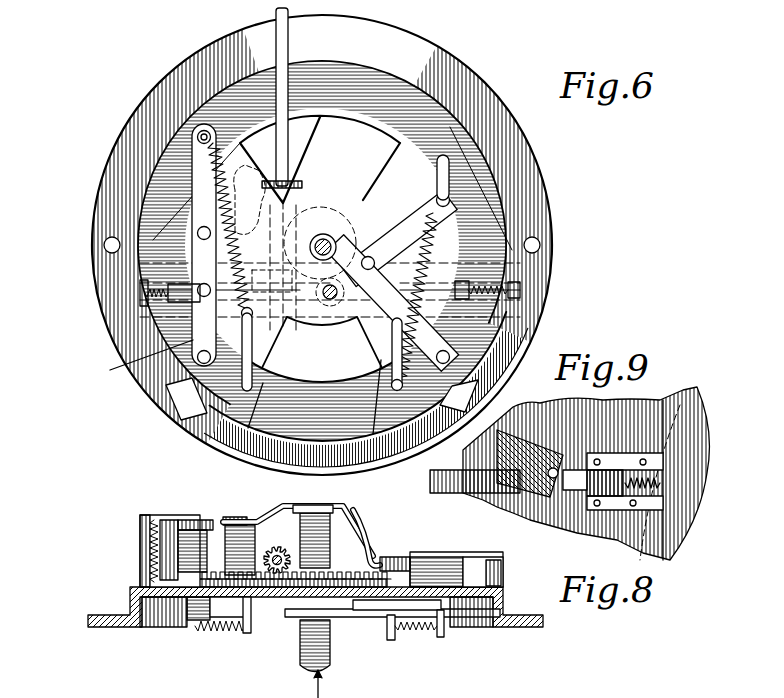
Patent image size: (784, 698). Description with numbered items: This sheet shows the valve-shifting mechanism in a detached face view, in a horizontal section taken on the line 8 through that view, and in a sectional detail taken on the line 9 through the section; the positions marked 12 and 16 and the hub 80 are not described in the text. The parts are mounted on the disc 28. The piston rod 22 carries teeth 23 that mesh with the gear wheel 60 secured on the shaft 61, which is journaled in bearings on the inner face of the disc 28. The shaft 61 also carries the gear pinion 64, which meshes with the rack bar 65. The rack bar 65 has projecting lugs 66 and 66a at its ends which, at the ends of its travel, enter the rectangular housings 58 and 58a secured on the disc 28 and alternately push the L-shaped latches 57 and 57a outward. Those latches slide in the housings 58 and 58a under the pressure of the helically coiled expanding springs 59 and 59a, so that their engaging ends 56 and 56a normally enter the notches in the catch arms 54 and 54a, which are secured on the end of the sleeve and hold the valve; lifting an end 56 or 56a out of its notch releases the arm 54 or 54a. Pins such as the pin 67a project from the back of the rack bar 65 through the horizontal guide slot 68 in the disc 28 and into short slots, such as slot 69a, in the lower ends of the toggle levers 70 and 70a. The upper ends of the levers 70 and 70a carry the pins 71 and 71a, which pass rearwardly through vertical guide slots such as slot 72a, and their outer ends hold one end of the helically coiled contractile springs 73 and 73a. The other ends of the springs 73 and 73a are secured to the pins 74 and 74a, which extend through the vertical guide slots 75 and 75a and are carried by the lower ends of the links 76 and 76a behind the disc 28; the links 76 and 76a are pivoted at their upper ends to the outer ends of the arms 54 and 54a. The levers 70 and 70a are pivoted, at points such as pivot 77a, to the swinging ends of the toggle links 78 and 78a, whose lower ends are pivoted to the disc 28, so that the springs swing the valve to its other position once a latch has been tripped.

In FIG. 6, the section line 8— 8 is at (598, 290).
In FIG. 8, the section line 9— 9 is at (530, 552).
In FIG. 8, the section line 12- 12 is at (219, 537).
In FIG. 6, the mounting lug 16 is at (212, 396).
In FIG. 6, the piston rod 22 is at (333, 243).
In FIG. 8, the piston rod 22 is at (303, 670).
In FIG. 6, the teeth 23 is at (326, 240).
In FIG. 8, the teeth 23 is at (318, 656).
In FIG. 8, the disc 28 is at (286, 613).
In FIG. 8, the catch arm 54 is at (270, 508).
In FIG. 9, the catch arm 54a is at (530, 445).
In FIG. 8, the catch arm 54a is at (360, 520).
In FIG. 8, the engaging end 56 is at (213, 520).
In FIG. 9, the engaging end 56a is at (575, 494).
In FIG. 8, the L-shaped latch 57 is at (165, 523).
In FIG. 9, the L-shaped latch 57a is at (570, 500).
In FIG. 8, the L-shaped latch 57a is at (445, 558).
In FIG. 6, the rectangular housing 58 is at (150, 306).
In FIG. 8, the rectangular housing 58 is at (150, 568).
In FIG. 6, the rectangular housing 58a is at (530, 316).
In FIG. 9, the rectangular housing 58a is at (622, 462).
In FIG. 8, the rectangular housing 58a is at (505, 583).
In FIG. 6, the helically coiled expanding spring 59 is at (140, 293).
In FIG. 8, the helically coiled expanding spring 59 is at (150, 535).
In FIG. 6, the helically coiled expanding spring 59a is at (532, 295).
In FIG. 9, the helically coiled expanding spring 59a is at (678, 527).
In FIG. 8, the helically coiled expanding spring 59a is at (472, 560).
In FIG. 8, the gear wheel 60 is at (277, 552).
In FIG. 6, the shaft 61 is at (288, 160).
In FIG. 8, the shaft 61 is at (277, 572).
In FIG. 6, the gear pinion 64 is at (285, 305).
In FIG. 8, the gear pinion 64 is at (291, 566).
In FIG. 9, the rack bar 65 is at (455, 485).
In FIG. 8, the rack bar 65 is at (345, 585).
In FIG. 8, the projecting lug 66 is at (178, 530).
In FIG. 8, the projecting lug 66a is at (388, 557).
In FIG. 6, the pin 67a is at (313, 300).
In FIG. 8, the pin 67a is at (345, 617).
In FIG. 6, the horizontal guide slot 68 is at (312, 335).
In FIG. 6, the short slot 69a is at (340, 296).
In FIG. 6, the toggle lever 70 is at (198, 190).
In FIG. 8, the toggle lever 70 is at (175, 608).
In FIG. 6, the toggle lever 70a is at (425, 213).
In FIG. 8, the toggle lever 70a is at (500, 605).
In FIG. 6, the pin 71 is at (197, 137).
In FIG. 8, the pin 71 is at (196, 625).
In FIG. 6, the pin 71a is at (442, 194).
In FIG. 8, the pin 71a is at (444, 628).
In FIG. 6, the vertical guide slot 72a is at (440, 158).
In FIG. 6, the helically coiled contractile spring 73 is at (205, 170).
In FIG. 8, the helically coiled contractile spring 73 is at (222, 633).
In FIG. 6, the helically coiled contractile spring 73a is at (449, 250).
In FIG. 8, the helically coiled contractile spring 73a is at (430, 636).
In FIG. 6, the pin 74 is at (246, 322).
In FIG. 8, the pin 74 is at (247, 632).
In FIG. 6, the pin 74a is at (405, 392).
In FIG. 8, the pin 74a is at (395, 632).
In FIG. 6, the vertical guide slot 75 is at (245, 413).
In FIG. 6, the vertical guide slot 75a is at (369, 405).
In FIG. 6, the link 76 is at (336, 236).
In FIG. 8, the link 76 is at (239, 546).
In FIG. 6, the link 76a is at (392, 343).
In FIG. 8, the link 76a is at (415, 548).
In FIG. 6, the pivot 77a is at (369, 256).
In FIG. 6, the toggle link 78 is at (139, 361).
In FIG. 8, the toggle link 78 is at (186, 614).
In FIG. 6, the toggle link 78a is at (431, 343).
In FIG. 8, the toggle link 78a is at (503, 590).
In FIG. 6, the hub 80 is at (323, 256).